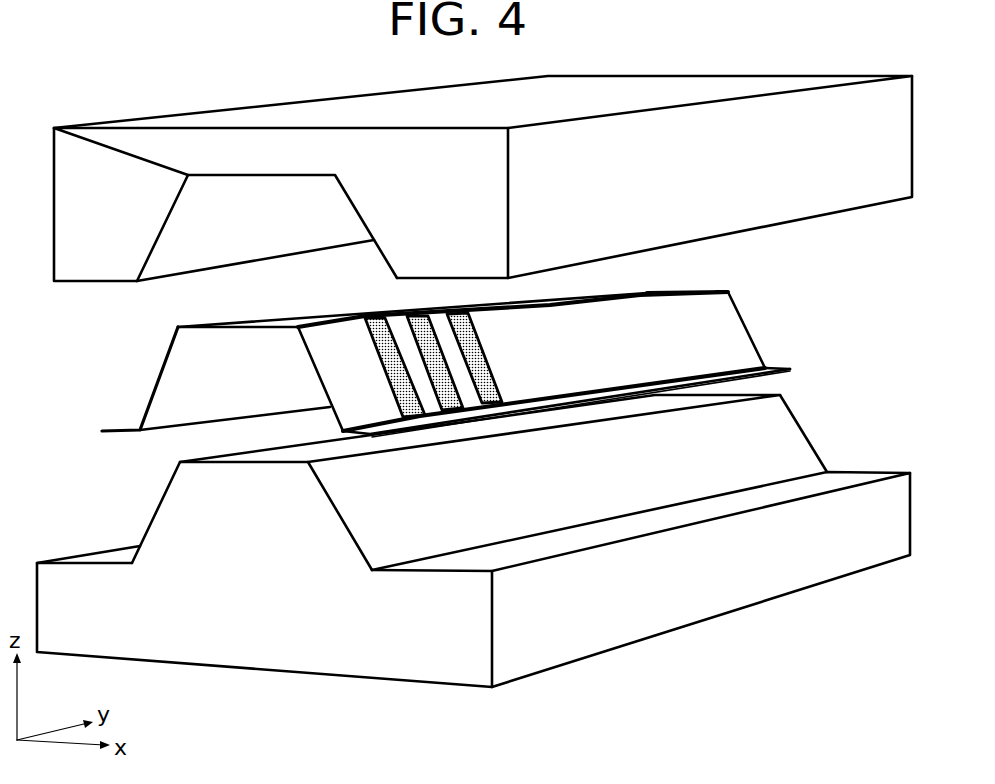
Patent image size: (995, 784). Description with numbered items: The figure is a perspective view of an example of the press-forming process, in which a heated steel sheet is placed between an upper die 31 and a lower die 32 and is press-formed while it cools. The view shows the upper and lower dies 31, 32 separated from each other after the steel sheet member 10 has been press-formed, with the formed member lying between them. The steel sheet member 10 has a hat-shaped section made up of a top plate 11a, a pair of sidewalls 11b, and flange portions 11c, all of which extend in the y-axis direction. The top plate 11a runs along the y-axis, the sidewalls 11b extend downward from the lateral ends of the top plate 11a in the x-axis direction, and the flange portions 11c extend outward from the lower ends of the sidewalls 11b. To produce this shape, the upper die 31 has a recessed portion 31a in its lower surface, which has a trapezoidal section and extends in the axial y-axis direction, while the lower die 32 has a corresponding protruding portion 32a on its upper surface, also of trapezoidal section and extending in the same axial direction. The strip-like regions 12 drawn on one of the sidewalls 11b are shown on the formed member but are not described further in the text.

The steel sheet member 10 is at (504, 343).
The top plate 11a is at (647, 290).
The sidewalls 11b is at (740, 332).
The flange portions 11c is at (770, 366).
The electrode strips 12 is at (488, 388).
The upper die 31 is at (483, 180).
The recessed portion 31a is at (310, 235).
The lower die 32 is at (473, 577).
The protruding portion 32a is at (163, 520).